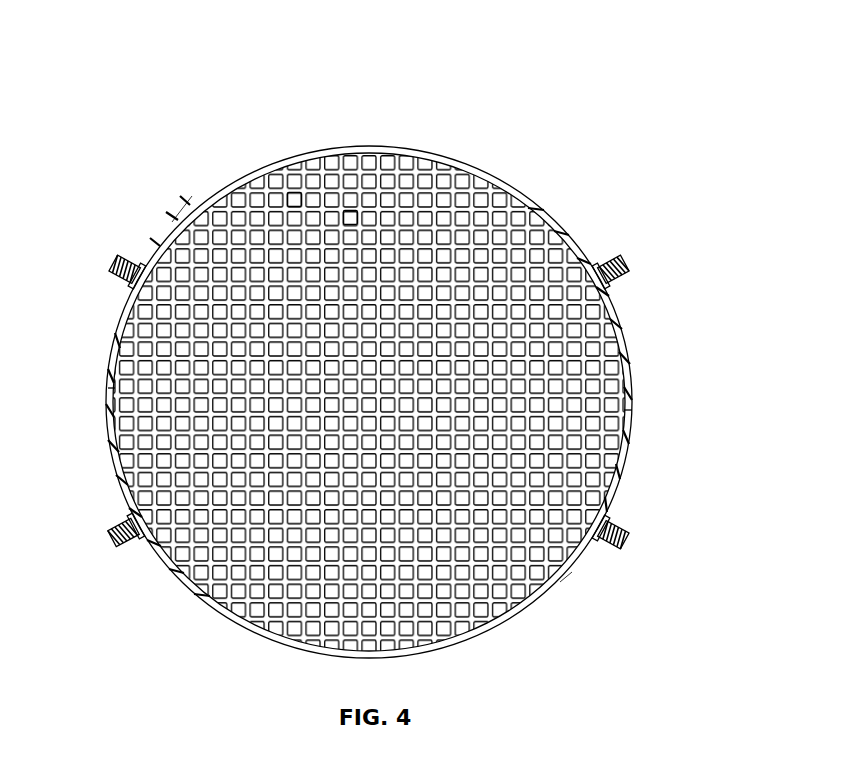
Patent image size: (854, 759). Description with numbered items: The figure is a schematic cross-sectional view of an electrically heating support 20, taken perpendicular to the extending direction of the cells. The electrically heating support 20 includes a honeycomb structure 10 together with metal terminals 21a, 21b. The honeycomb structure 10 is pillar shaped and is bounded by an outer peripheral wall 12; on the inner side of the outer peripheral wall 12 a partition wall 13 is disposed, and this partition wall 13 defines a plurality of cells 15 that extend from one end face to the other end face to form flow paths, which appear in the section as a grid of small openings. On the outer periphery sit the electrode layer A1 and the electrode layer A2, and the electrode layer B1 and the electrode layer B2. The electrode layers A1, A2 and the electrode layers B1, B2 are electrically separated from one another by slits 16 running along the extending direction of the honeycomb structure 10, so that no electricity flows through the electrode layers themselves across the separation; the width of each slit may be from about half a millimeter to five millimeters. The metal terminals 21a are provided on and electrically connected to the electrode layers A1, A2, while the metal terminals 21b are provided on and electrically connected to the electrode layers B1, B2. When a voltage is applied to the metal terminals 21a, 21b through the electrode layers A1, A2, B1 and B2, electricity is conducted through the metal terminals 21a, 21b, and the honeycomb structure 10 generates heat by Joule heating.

The honeycomb structure 10 is at (418, 148).
The outer peripheral wall 12 is at (245, 180).
The partition wall 13 is at (302, 194).
The cell 15 is at (357, 206).
The slit 16 is at (106, 403).
The electrically heating support 20 is at (377, 97).
The metal terminal 21a is at (114, 268).
The metal terminal 21b is at (633, 265).
The electrode layer A1 is at (170, 576).
The electrode layer A2 is at (166, 228).
The electrode layer B1 is at (570, 578).
The electrode layer B2 is at (560, 230).